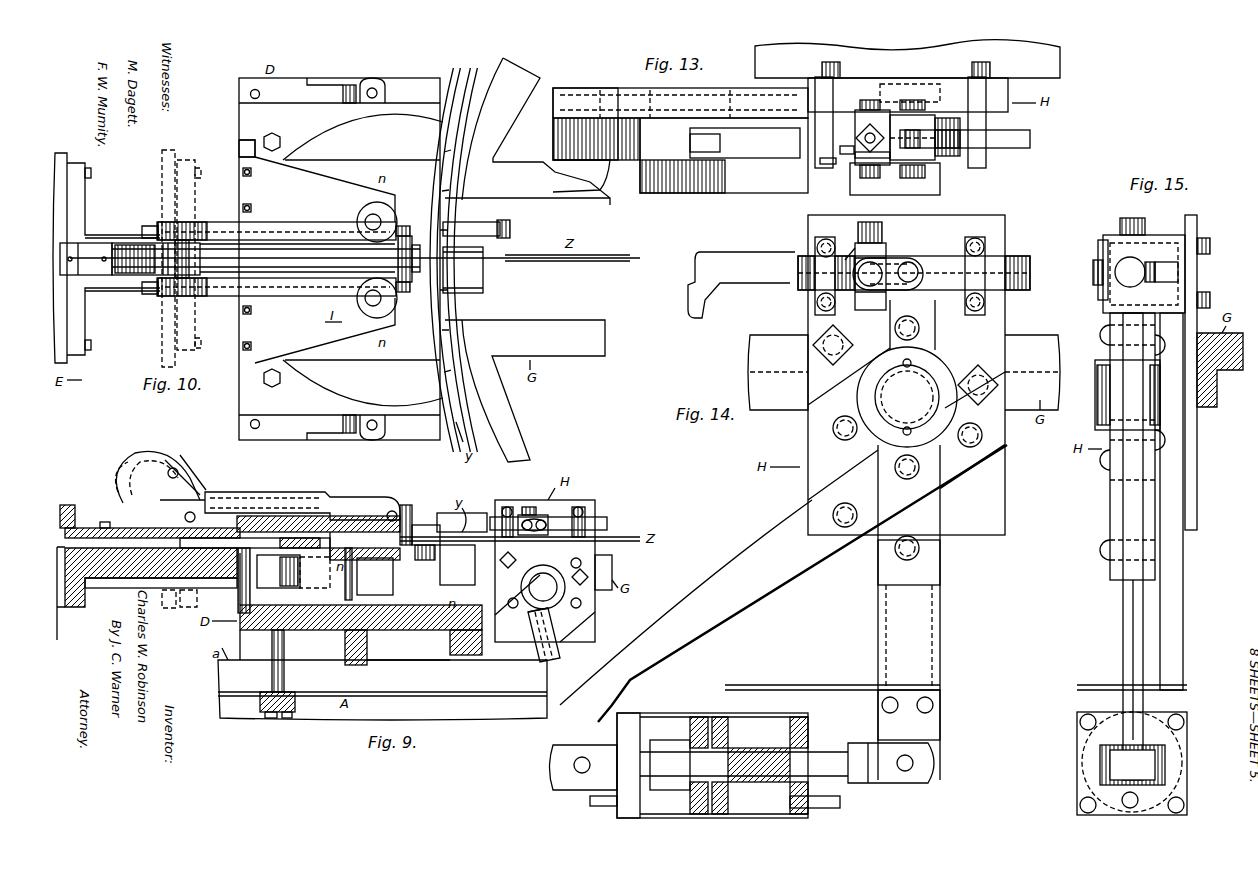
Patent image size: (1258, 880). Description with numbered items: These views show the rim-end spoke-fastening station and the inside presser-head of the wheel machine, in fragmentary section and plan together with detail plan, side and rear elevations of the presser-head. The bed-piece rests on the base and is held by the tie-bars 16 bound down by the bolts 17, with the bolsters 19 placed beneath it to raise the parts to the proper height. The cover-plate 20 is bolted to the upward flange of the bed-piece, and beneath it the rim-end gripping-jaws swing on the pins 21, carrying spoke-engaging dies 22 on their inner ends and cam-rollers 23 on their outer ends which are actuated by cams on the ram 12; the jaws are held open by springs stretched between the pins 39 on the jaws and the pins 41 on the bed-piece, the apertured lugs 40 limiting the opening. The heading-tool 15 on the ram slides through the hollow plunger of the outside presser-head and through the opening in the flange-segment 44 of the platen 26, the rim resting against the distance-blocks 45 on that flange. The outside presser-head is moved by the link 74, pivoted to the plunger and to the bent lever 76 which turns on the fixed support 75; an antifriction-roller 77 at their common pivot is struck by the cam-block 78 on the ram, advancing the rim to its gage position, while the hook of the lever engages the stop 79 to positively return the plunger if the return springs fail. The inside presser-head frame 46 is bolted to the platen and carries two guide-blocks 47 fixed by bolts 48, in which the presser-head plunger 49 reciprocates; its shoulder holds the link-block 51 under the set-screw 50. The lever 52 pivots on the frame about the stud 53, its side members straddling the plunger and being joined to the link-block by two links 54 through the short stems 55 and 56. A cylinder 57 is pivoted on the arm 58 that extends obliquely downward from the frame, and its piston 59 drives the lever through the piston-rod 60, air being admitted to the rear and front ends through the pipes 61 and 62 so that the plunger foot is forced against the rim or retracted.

In FIG. 10, the ram 12 is at (108, 288).
In FIG. 9, the ram 12 is at (112, 578).
In FIG. 10, the rim end heading tool 15 is at (173, 259).
In FIG. 9, the rim end heading tool 15 is at (246, 580).
In FIG. 9, the tie-bar 16 is at (262, 702).
In FIG. 9, the bolt 17 is at (284, 677).
In FIG. 9, the bolster 19 is at (361, 635).
In FIG. 10, the cover-plate 20 is at (341, 259).
In FIG. 9, the cover-plate 20 is at (355, 516).
In FIG. 10, the pin 21 is at (370, 216).
In FIG. 10, the spoke-engaging die 22 is at (463, 270).
In FIG. 9, the spoke-engaging die 22 is at (457, 565).
In FIG. 9, the cam-roller 23 is at (278, 571).
In FIG. 10, the platen 26 is at (527, 260).
In FIG. 9, the platen 26 is at (612, 561).
In FIG. 14, the platen 26 is at (904, 372).
In FIG. 13, the platen 26 is at (907, 58).
In FIG. 15, the platen 26 is at (1217, 394).
In FIG. 10, the pin 39 is at (370, 85).
In FIG. 10, the apertured lug 40 is at (348, 85).
In FIG. 10, the upwardly-projecting pin 41 is at (250, 95).
In FIG. 10, the flange-segment 44 is at (454, 432).
In FIG. 9, the flange-segment 44 is at (424, 525).
In FIG. 10, the distance-block 45 is at (455, 104).
In FIG. 9, the presser-head frame 46 is at (545, 571).
In FIG. 14, the presser-head frame 46 is at (906, 375).
In FIG. 13, the presser-head frame 46 is at (1008, 86).
In FIG. 15, the presser-head frame 46 is at (1197, 490).
In FIG. 9, the guide-block 47 is at (502, 512).
In FIG. 14, the guide-block 47 is at (826, 240).
In FIG. 13, the guide-block 47 is at (815, 160).
In FIG. 15, the guide-block 47 is at (1166, 261).
In FIG. 9, the bolt 48 is at (510, 506).
In FIG. 14, the bolt 48 is at (817, 248).
In FIG. 13, the bolt 48 is at (835, 66).
In FIG. 15, the bolt 48 is at (1212, 248).
In FIG. 10, the presser-head plunger 49 is at (510, 236).
In FIG. 9, the presser-head plunger 49 is at (608, 523).
In FIG. 14, the presser-head plunger 49 is at (914, 273).
In FIG. 13, the presser-head plunger 49 is at (1030, 137).
In FIG. 15, the presser-head plunger 49 is at (1118, 284).
In FIG. 9, the set-screw 50 is at (530, 506).
In FIG. 14, the set-screw 50 is at (880, 228).
In FIG. 13, the set-screw 50 is at (850, 156).
In FIG. 15, the set-screw 50 is at (1142, 226).
In FIG. 9, the link-block 51 is at (540, 516).
In FIG. 14, the link-block 51 is at (886, 256).
In FIG. 13, the link-block 51 is at (858, 112).
In FIG. 15, the link-block 51 is at (1106, 240).
In FIG. 9, the lever 52 is at (538, 657).
In FIG. 14, the lever 52 is at (940, 600).
In FIG. 15, the lever 52 is at (1118, 603).
In FIG. 13, the stud 53 is at (940, 177).
In FIG. 15, the stud 53 is at (1097, 399).
In FIG. 9, the link 54 is at (547, 515).
In FIG. 14, the link 54 is at (888, 282).
In FIG. 13, the link 54 is at (878, 171).
In FIG. 15, the link 54 is at (1100, 250).
In FIG. 9, the short stem 55 is at (528, 588).
In FIG. 14, the short stem 55 is at (928, 238).
In FIG. 13, the short stem 55 is at (914, 136).
In FIG. 15, the short stem 55 is at (1093, 276).
In FIG. 9, the short stem 56 is at (526, 530).
In FIG. 14, the short stem 56 is at (868, 287).
In FIG. 13, the short stem 56 is at (872, 192).
In FIG. 14, the cylinder 57 is at (680, 713).
In FIG. 13, the cylinder 57 is at (703, 163).
In FIG. 15, the cylinder 57 is at (1077, 769).
In FIG. 10, the arm 58 is at (380, 93).
In FIG. 14, the arm 58 is at (783, 583).
In FIG. 13, the arm 58 is at (680, 140).
In FIG. 15, the arm 58 is at (1172, 501).
In FIG. 14, the piston 59 is at (748, 785).
In FIG. 14, the piston-rod 60 is at (787, 763).
In FIG. 14, the pipe 61 is at (826, 800).
In FIG. 15, the pipe 61 is at (1141, 796).
In FIG. 14, the pipe 62 is at (590, 801).
In FIG. 10, the link 74 is at (302, 266).
In FIG. 9, the link 74 is at (302, 506).
In FIG. 10, the fixed support 75 is at (269, 259).
In FIG. 9, the fixed support 75 is at (190, 492).
In FIG. 10, the bent lever 76 is at (160, 268).
In FIG. 9, the bent lever 76 is at (172, 462).
In FIG. 10, the antifriction-roller 77 is at (188, 240).
In FIG. 9, the antifriction-roller 77 is at (185, 518).
In FIG. 10, the cam-block 78 is at (86, 259).
In FIG. 9, the cam-block 78 is at (197, 526).
In FIG. 10, the stop 79 is at (106, 258).
In FIG. 9, the stop 79 is at (69, 508).